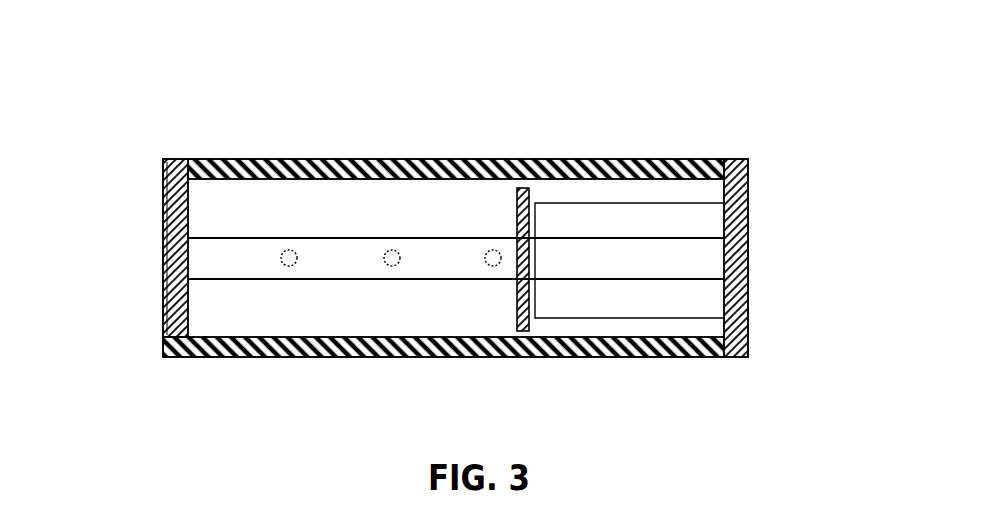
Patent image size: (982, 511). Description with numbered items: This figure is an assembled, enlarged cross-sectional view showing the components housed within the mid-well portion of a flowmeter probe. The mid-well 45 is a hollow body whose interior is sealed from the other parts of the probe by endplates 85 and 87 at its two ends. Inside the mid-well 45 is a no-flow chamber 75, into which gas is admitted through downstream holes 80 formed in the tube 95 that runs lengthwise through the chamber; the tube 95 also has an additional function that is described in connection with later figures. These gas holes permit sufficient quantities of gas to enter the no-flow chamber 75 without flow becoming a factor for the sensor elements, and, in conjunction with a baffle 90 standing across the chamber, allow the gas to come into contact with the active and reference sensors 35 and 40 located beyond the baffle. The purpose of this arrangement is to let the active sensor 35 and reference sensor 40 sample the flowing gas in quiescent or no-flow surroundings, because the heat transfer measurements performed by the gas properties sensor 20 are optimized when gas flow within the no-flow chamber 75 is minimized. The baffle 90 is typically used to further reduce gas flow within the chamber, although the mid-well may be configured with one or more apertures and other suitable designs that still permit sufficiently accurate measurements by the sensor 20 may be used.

The gas properties sensor 20 is at (779, 272).
The active sensor 35 is at (638, 220).
The reference sensor 40 is at (632, 303).
The mid-well 45 is at (566, 146).
The no-flow chamber 75 is at (203, 307).
The downstream holes 80 is at (422, 292).
The endplate 85 is at (162, 222).
The endplate 87 is at (748, 312).
The baffle 90 is at (517, 222).
The tube 95 is at (247, 250).